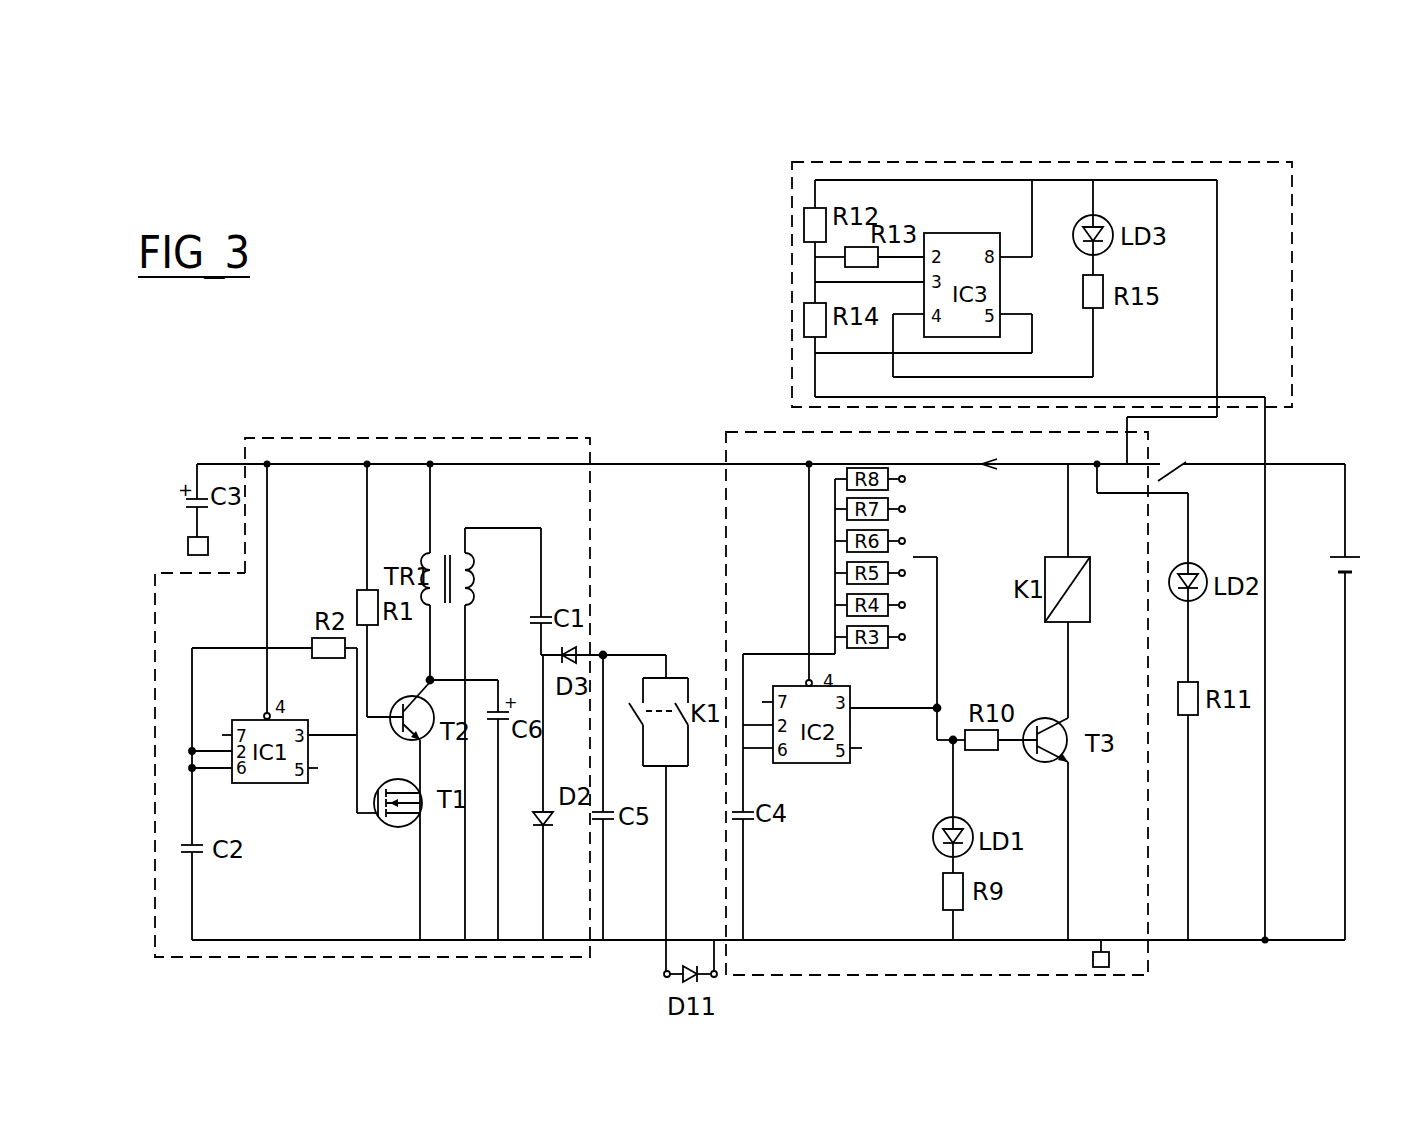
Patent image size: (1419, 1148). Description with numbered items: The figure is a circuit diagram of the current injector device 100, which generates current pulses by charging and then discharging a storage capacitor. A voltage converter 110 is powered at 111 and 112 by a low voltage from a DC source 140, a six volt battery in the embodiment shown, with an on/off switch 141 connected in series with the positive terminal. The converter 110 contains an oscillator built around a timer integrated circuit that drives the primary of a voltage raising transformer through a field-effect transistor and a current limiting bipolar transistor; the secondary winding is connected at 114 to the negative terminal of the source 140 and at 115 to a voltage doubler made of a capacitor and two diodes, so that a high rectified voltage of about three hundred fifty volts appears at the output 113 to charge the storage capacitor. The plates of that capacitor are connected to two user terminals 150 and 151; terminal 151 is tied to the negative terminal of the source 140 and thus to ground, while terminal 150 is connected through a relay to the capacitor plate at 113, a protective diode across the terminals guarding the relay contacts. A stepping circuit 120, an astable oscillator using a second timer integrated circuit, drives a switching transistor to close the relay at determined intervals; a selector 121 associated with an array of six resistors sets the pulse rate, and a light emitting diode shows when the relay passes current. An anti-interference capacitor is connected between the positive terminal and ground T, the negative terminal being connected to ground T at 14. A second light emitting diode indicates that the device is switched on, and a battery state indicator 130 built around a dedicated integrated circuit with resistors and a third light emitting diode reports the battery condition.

The current injector device 100 is at (474, 298).
The voltage converter 110 is at (350, 437).
The converter supply connection 111 is at (617, 464).
The converter negative supply connection 112 is at (623, 942).
The converter output 113 is at (604, 654).
The secondary winding connection to negative terminal 114 is at (466, 892).
The secondary winding connection to voltage doubler 115 is at (490, 528).
The stepping circuit 120 is at (721, 463).
The selector 121 is at (938, 578).
The battery state indicator 130 is at (790, 210).
The DC source 140 is at (1357, 555).
The on/off switch 141 is at (1170, 470).
The ground connection 14 is at (1092, 948).
The user terminal 150 is at (667, 978).
The user terminal 151 is at (714, 978).
The ground T is at (190, 546).